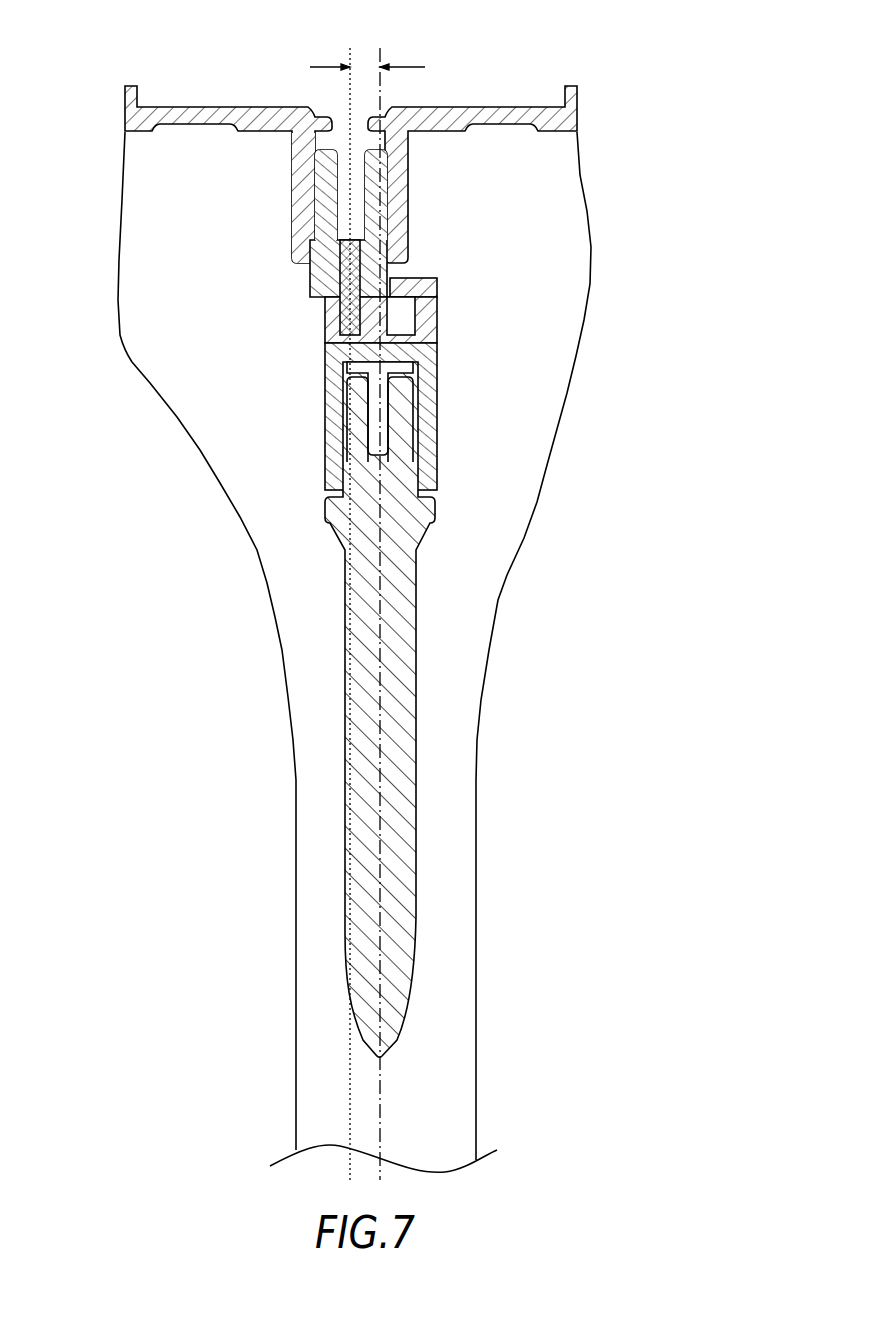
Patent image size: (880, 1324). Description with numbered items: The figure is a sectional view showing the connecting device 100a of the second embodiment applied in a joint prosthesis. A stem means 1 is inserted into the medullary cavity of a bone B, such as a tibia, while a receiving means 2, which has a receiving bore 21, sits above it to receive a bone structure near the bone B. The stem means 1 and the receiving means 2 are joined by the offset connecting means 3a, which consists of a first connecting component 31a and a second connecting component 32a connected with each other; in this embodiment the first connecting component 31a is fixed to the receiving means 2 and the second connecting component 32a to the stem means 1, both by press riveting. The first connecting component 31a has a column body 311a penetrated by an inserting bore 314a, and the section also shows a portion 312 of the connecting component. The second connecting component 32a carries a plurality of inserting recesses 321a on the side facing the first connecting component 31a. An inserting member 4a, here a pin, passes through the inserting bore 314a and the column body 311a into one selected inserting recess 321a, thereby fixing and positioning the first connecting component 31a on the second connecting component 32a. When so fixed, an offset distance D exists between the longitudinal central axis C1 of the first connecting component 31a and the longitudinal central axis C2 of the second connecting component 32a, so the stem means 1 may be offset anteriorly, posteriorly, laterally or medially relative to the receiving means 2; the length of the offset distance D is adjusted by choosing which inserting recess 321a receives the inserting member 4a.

The connecting device 100a is at (390, 537).
The stem means 1 is at (432, 709).
The receiving means 2 is at (314, 174).
The receiving bore 21 is at (312, 172).
The offset connecting means 3a is at (440, 381).
The first connecting component 31a is at (343, 223).
The column body 311a is at (316, 206).
The flange of connecting portion 312 is at (433, 279).
The inserting bore 314a is at (358, 172).
The inserting recess 321a is at (407, 308).
The second connecting component 32a is at (437, 424).
The inserting member 4a is at (330, 315).
The bone B is at (577, 230).
The longitudinal central axis of the first connecting component C1 is at (350, 1085).
The longitudinal central axis of the second connecting component C2 is at (380, 1092).
The offset distance D is at (353, 58).